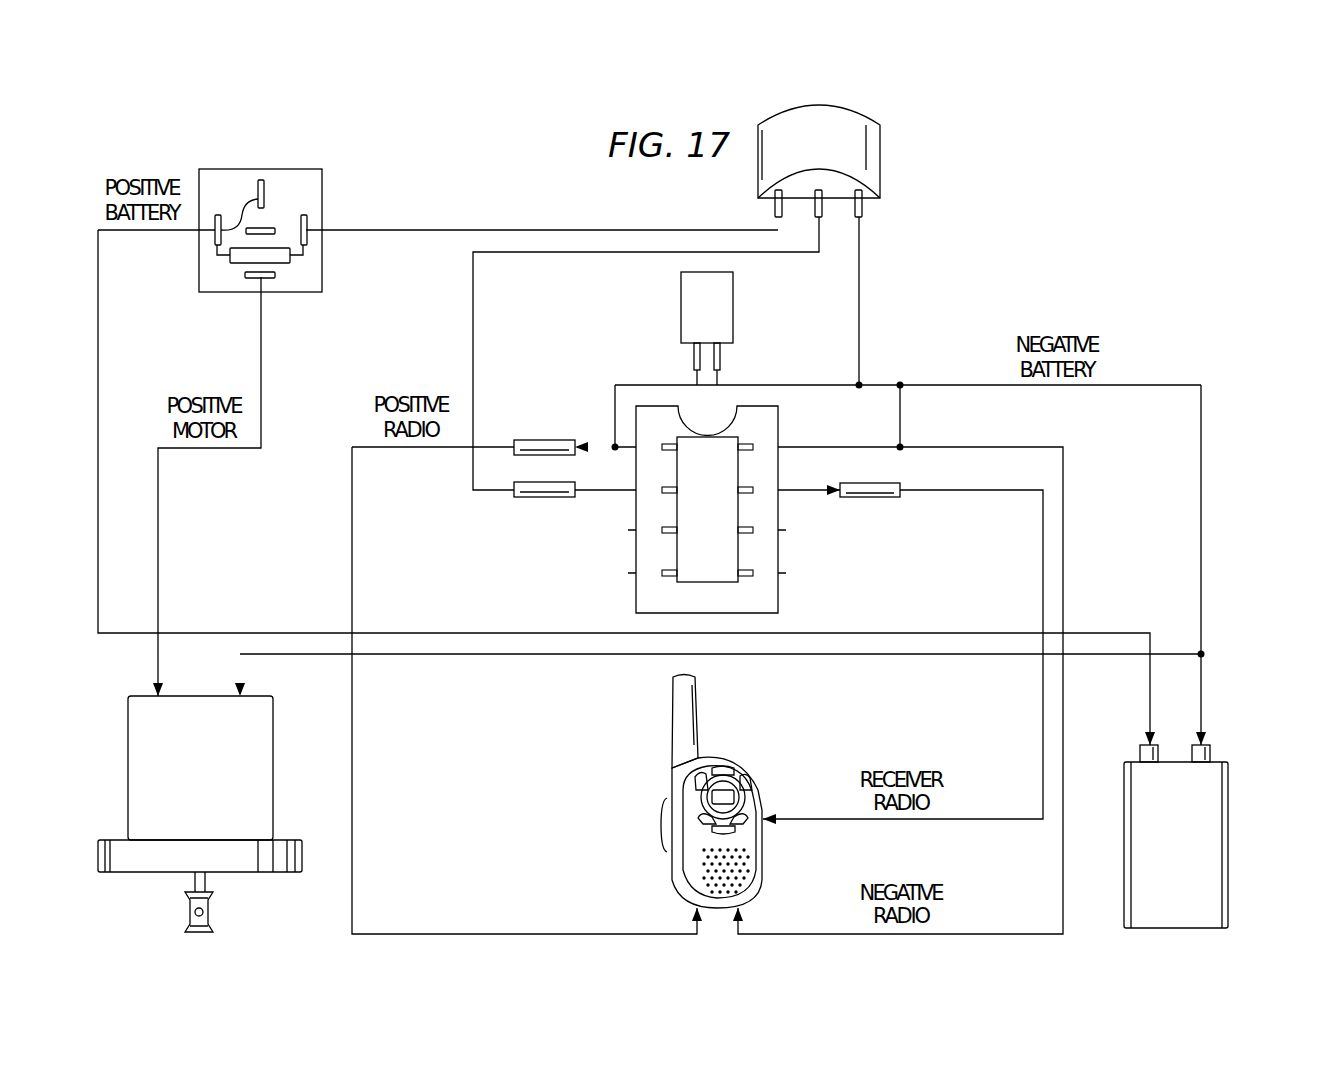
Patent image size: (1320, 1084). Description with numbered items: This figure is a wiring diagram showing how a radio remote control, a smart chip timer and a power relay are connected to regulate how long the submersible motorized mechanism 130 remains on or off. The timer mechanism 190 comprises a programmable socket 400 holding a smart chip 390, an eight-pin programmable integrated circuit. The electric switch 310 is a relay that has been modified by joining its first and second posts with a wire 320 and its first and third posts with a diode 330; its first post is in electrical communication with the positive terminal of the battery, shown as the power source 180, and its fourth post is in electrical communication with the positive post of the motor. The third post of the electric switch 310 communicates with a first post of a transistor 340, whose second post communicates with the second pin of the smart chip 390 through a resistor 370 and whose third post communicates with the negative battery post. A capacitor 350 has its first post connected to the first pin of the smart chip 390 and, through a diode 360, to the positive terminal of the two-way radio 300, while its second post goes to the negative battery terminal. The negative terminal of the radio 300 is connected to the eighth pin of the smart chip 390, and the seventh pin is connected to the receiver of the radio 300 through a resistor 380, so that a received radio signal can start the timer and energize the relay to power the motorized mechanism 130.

The submersible motorized mechanism 130 is at (135, 872).
The power source 180 is at (1228, 887).
The timer mechanism 190 is at (1102, 210).
The receiver radio 300 is at (668, 822).
The electric switch 310 is at (322, 190).
The wire 320 is at (238, 192).
The diode 330 is at (283, 248).
The transistor 340 is at (880, 160).
The capacitor 350 is at (733, 312).
The diode 360 is at (538, 440).
The resistor 370 is at (541, 498).
The resistor 380 is at (871, 499).
The smart chip 390 is at (727, 523).
The programmable socket 400 is at (778, 594).